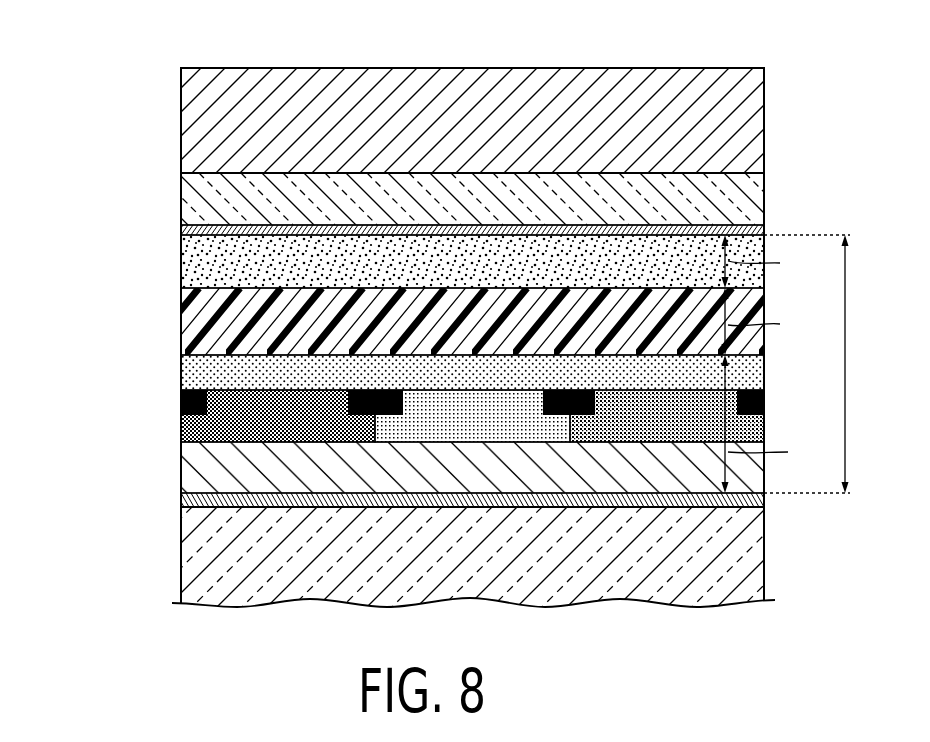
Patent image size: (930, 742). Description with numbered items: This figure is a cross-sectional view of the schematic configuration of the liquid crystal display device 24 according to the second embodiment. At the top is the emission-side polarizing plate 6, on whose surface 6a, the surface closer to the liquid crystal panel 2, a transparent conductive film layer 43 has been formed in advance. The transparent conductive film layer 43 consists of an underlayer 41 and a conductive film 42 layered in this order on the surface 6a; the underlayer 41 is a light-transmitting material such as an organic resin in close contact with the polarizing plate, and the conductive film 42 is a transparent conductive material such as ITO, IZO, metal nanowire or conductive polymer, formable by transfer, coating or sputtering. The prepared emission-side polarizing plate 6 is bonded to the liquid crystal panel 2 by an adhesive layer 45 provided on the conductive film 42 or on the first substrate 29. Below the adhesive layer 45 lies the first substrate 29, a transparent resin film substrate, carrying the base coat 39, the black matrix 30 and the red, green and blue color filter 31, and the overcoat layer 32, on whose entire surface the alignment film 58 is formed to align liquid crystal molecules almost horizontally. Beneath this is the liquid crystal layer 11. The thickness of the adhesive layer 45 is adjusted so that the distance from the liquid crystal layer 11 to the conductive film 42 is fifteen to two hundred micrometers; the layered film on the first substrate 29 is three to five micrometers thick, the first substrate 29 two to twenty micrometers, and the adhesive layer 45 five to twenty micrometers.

The liquid crystal display device 24 is at (121, 63).
The emission-side polarizing plate 6 is at (186, 128).
The surface of the emission-side polarizing plate 6a is at (750, 182).
The liquid crystal panel 2 is at (68, 547).
The transparent conductive film layer 43 is at (118, 188).
The underlayer 41 is at (187, 199).
The conductive film 42 is at (187, 230).
The adhesive layer 45 is at (189, 259).
The first substrate 29 is at (200, 324).
The base coat 39 is at (190, 375).
The black matrix 30 is at (195, 402).
The color filter 31 is at (195, 427).
The overcoat layer 32 is at (197, 474).
The alignment film 58 is at (196, 501).
The liquid crystal layer 11 is at (197, 531).